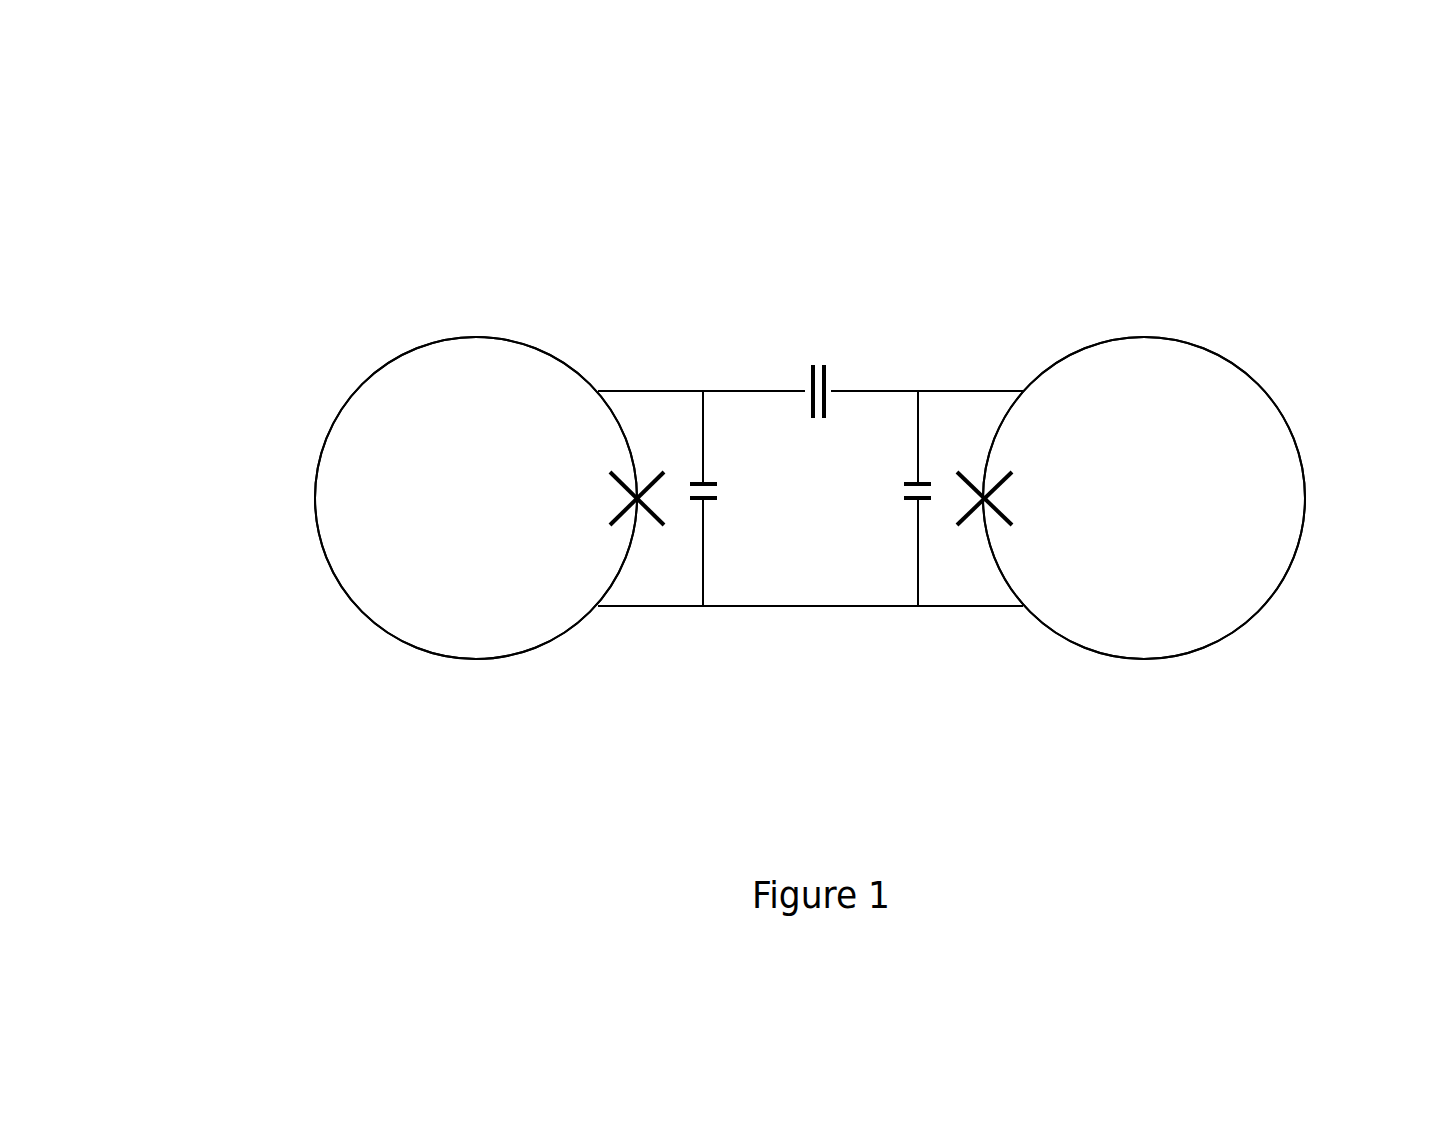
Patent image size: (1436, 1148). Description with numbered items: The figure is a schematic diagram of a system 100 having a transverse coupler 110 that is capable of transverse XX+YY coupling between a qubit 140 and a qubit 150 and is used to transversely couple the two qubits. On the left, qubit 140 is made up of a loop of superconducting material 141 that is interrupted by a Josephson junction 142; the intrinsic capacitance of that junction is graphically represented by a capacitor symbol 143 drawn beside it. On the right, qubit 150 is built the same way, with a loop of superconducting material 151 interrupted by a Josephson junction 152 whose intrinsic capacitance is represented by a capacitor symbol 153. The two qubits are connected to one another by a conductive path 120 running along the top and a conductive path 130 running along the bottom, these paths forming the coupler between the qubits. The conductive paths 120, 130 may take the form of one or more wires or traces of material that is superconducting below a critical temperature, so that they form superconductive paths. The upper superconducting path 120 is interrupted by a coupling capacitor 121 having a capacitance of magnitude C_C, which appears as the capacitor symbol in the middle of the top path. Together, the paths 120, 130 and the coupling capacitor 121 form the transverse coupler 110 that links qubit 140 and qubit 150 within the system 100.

The system 100 is at (838, 257).
The transverse coupler 110 is at (837, 647).
The conductive path 120 is at (865, 392).
The coupling capacitor 121 is at (810, 352).
The conductive path 130 is at (796, 607).
The qubit 140 is at (395, 327).
The loop of superconducting material 141 is at (363, 383).
The Josephson junction 142 is at (625, 527).
The capacitor symbol 143 is at (688, 514).
The qubit 150 is at (1212, 332).
The loop of superconducting material 151 is at (1262, 390).
The Josephson junction 152 is at (997, 528).
The capacitor symbol 153 is at (932, 515).